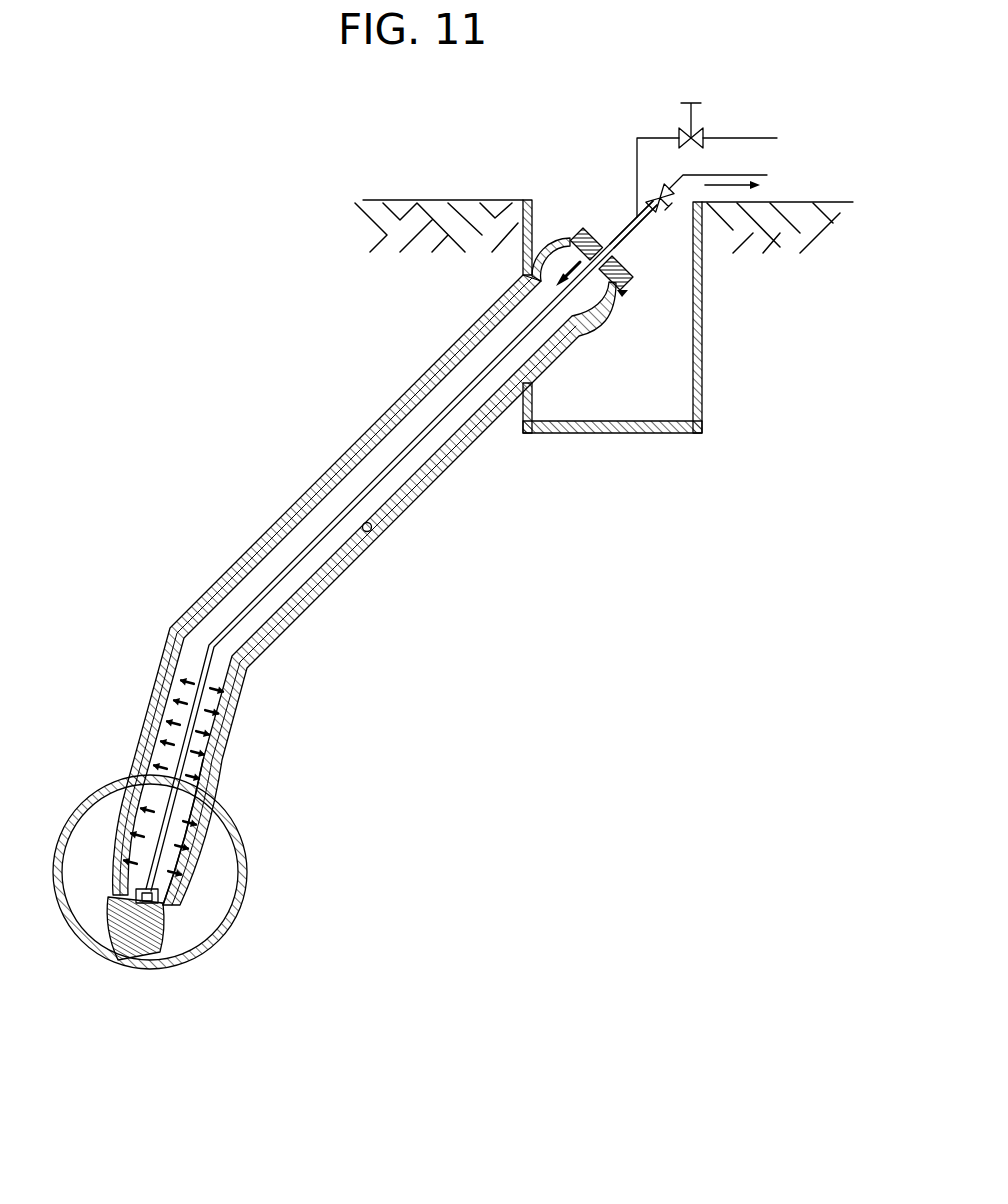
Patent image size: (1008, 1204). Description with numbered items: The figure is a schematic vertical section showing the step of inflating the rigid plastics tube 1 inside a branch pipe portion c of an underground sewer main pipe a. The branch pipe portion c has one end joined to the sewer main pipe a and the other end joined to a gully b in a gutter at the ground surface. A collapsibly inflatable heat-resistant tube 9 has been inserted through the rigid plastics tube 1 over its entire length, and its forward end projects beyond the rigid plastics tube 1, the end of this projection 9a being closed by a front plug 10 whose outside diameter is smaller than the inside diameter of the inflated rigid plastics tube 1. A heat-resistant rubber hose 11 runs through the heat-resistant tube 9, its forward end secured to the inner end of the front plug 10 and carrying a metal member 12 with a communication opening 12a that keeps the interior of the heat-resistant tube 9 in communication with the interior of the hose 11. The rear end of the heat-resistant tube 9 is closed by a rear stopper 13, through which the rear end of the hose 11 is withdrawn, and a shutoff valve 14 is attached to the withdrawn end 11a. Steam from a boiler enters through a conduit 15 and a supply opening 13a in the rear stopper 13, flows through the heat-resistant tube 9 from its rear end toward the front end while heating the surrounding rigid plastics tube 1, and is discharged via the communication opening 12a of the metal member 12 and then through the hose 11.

The rigid plastics tube 1 is at (294, 628).
The heat-resistant tube 9 is at (374, 532).
The projection 9a is at (204, 842).
The front plug 10 is at (171, 971).
The heat-resistant hose 11 is at (441, 428).
The withdrawn end 11a is at (625, 249).
The metal member 12 is at (120, 887).
The communication opening 12a is at (116, 956).
The rear stopper 13 is at (619, 292).
The supply opening 13a is at (586, 228).
The shutoff valve 14 is at (656, 200).
The conduit 15 is at (636, 157).
The sewer main pipe a is at (183, 911).
The gully b is at (704, 372).
The branch pipe portion c is at (428, 370).